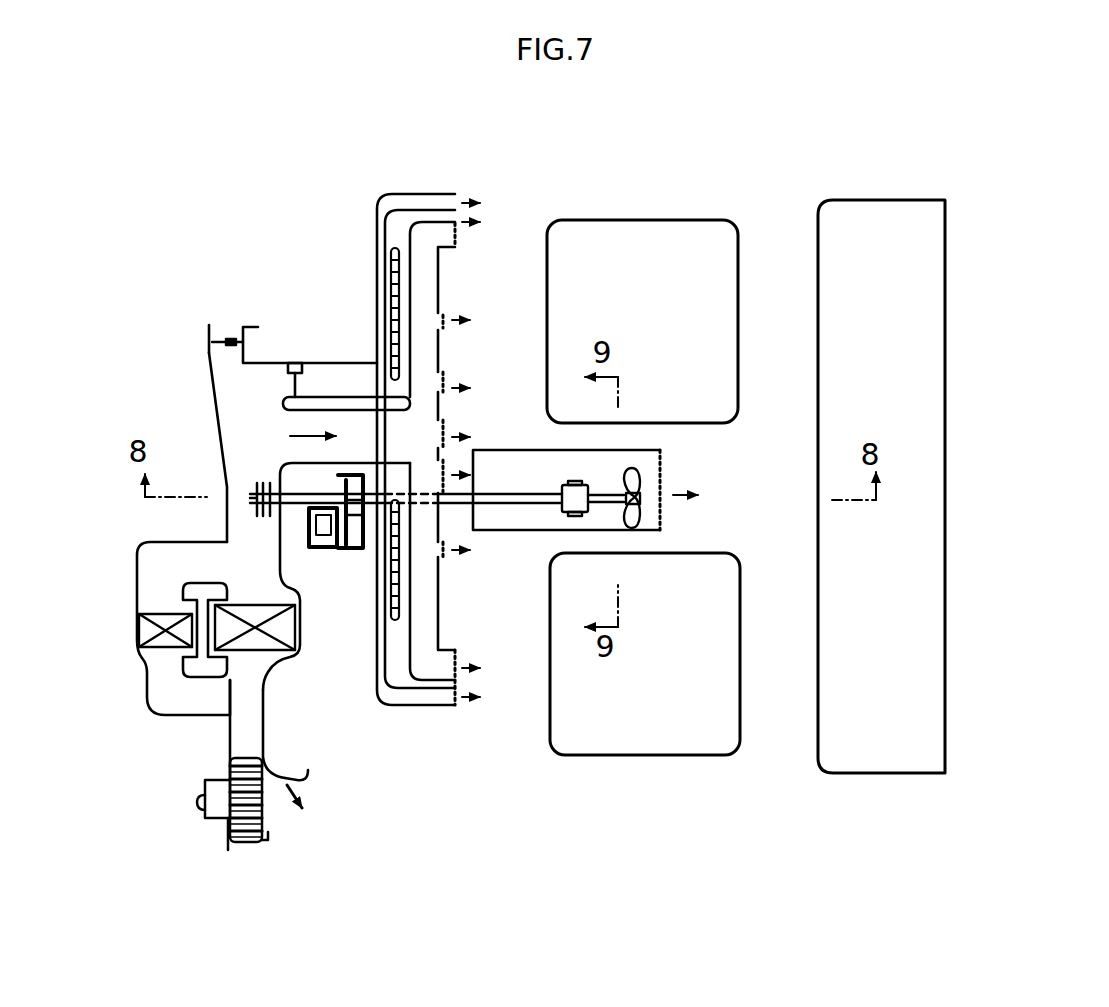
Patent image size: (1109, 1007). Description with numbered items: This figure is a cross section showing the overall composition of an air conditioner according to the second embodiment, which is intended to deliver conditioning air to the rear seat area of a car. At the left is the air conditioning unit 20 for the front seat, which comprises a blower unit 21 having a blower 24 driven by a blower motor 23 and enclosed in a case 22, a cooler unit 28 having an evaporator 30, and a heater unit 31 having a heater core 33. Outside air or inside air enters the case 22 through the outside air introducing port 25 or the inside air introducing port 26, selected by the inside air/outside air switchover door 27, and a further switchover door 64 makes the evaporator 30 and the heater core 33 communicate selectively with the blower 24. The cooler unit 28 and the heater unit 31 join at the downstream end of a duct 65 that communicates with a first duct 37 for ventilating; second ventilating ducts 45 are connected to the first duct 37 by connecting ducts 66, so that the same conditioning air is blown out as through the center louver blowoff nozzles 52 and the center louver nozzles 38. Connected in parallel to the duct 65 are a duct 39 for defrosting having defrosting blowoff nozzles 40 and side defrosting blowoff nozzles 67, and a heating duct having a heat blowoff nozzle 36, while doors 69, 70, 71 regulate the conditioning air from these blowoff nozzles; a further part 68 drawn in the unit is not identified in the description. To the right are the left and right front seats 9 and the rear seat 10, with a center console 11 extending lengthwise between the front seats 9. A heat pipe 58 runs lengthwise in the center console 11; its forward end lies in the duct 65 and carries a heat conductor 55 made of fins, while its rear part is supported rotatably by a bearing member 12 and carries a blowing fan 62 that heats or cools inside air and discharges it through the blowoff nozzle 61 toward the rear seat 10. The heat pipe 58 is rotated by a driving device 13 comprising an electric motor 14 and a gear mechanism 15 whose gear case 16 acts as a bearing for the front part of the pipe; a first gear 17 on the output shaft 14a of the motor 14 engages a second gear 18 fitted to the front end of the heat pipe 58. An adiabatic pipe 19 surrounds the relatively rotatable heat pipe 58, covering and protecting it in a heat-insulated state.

The front seats 9 is at (675, 220).
The rear seat 10 is at (818, 546).
The center console 11 is at (522, 448).
The bearing member 12 is at (560, 508).
The driving device 13 is at (341, 554).
The electric motor 14 is at (309, 535).
The output shaft 14a is at (343, 548).
The gear mechanism 15 is at (355, 550).
The gear case 16 is at (308, 525).
The first gear 17 is at (359, 550).
The second gear 18 is at (352, 478).
The adiabatic pipe 19 is at (483, 507).
The air conditioning unit 20 is at (167, 730).
The blower unit 21 is at (226, 853).
The case 22 is at (263, 820).
The blower motor 23 is at (205, 813).
The blower 24 is at (266, 820).
The outside air introducing port 25 is at (306, 790).
The inside air introducing port 26 is at (293, 827).
The inside air/outside air switchover door 27 is at (308, 812).
The cooler unit 28 is at (287, 665).
The evaporator 30 is at (248, 653).
The heater unit 31 is at (138, 650).
The heater core 33 is at (157, 610).
The heat blowoff nozzle 36 is at (226, 334).
The first duct 37 is at (350, 400).
The center louver blowoff nozzles 38 is at (447, 327).
The duct for defrosting 39 is at (375, 363).
The defrosting blowoff nozzles 40 is at (393, 282).
The second ventilating ducts 45 is at (415, 224).
The center louver blowoff nozzles 52 is at (458, 247).
The heat conductor 55 is at (246, 481).
The heat pipe 58 is at (648, 500).
The blowoff nozzle 61 is at (668, 487).
The blowing fan 62 is at (660, 460).
The switchover door 64 is at (223, 703).
The duct 65 is at (225, 493).
The connecting ducts 66 is at (438, 297).
The side defrosting blowoff nozzles 67 is at (460, 200).
The terminal 68 is at (210, 358).
The door 69 is at (288, 436).
The door 70 is at (294, 372).
The door 71 is at (236, 330).